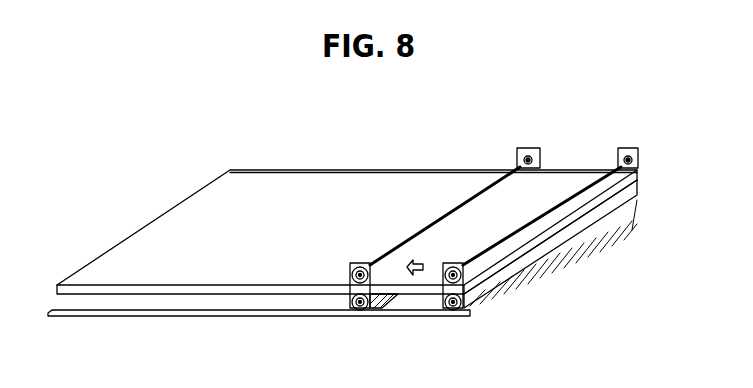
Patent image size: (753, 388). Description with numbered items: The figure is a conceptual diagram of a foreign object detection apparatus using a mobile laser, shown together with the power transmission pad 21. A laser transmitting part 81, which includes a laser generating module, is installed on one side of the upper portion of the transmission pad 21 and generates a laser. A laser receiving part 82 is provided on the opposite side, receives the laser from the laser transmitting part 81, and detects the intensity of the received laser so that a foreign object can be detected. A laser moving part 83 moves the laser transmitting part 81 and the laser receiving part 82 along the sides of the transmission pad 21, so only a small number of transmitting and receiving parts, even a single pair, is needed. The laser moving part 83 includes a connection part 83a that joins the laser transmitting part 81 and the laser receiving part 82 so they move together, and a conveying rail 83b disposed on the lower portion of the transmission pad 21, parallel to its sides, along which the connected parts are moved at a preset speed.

The power transmission pad 21 is at (142, 228).
The laser transmitting part 81 is at (350, 266).
The laser receiving part 82 is at (527, 148).
The laser moving part 83 is at (342, 268).
The connection part 83a is at (565, 246).
The conveying rail 83b is at (291, 330).